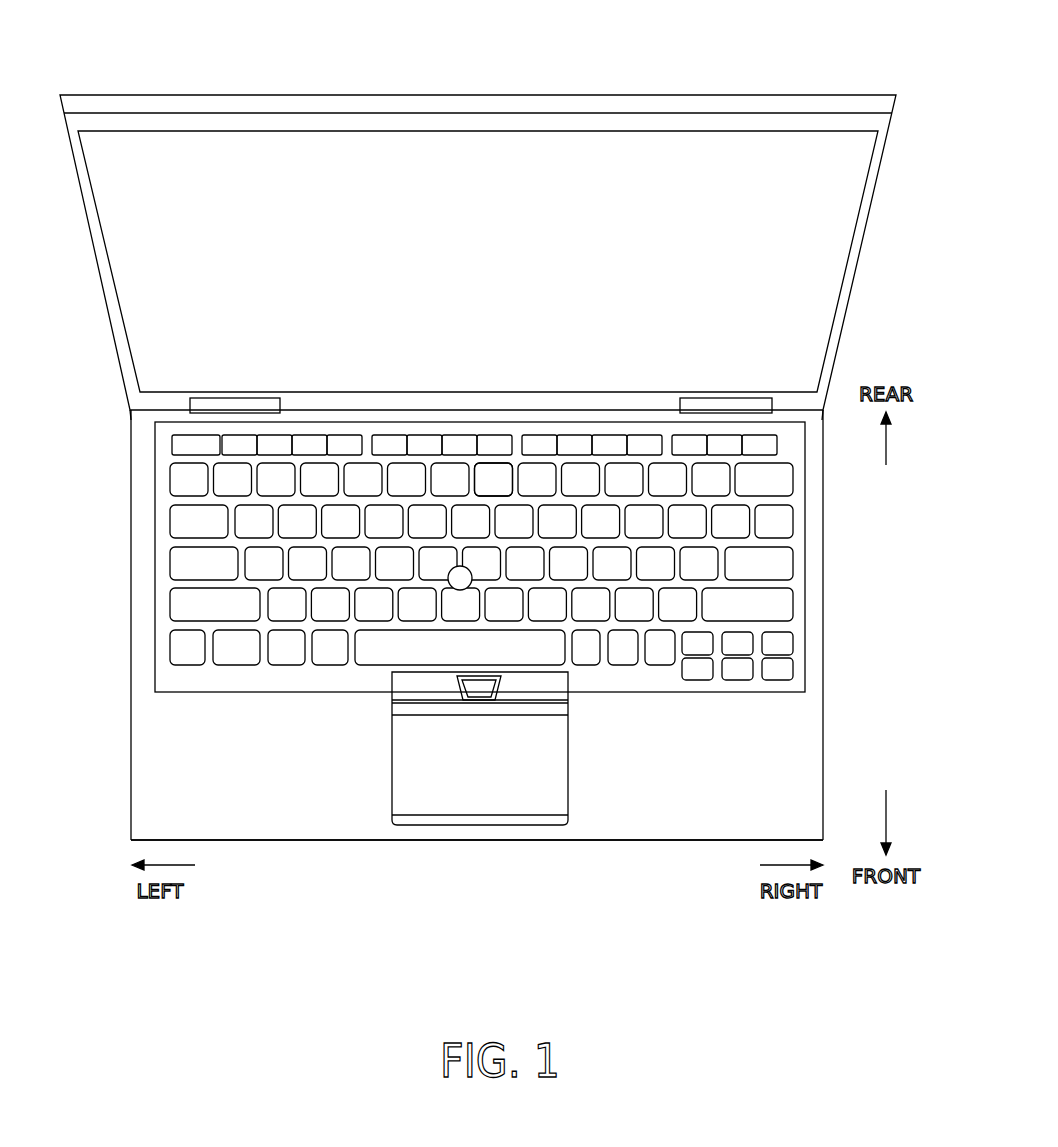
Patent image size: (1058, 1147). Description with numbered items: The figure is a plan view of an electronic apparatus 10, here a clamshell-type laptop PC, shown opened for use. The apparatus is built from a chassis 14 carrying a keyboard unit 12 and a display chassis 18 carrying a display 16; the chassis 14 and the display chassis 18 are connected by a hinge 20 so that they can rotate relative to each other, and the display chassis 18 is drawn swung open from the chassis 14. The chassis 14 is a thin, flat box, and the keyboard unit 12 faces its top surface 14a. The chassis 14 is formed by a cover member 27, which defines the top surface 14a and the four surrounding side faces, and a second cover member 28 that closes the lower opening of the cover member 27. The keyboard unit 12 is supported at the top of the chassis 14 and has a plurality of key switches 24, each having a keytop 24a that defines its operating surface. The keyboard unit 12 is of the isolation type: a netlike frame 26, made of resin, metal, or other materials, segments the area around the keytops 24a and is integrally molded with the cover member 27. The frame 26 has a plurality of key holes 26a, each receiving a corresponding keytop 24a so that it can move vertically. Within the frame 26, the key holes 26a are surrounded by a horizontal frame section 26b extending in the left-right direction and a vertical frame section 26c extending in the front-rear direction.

The electronic apparatus 10 is at (47, 35).
The keyboard unit 12 is at (166, 532).
The chassis 14 is at (895, 690).
The top surface 14a is at (143, 812).
The display 16 is at (822, 250).
The display chassis 18 is at (886, 179).
The hinge 20 is at (220, 397).
The key switch 24 is at (495, 460).
The keytop 24a is at (426, 517).
The frame 26 is at (288, 676).
The key hole 26a is at (580, 468).
The horizontal frame section 26b is at (210, 585).
The vertical frame section 26c is at (252, 481).
The cover member 27 is at (783, 713).
The cover member 28 is at (782, 752).